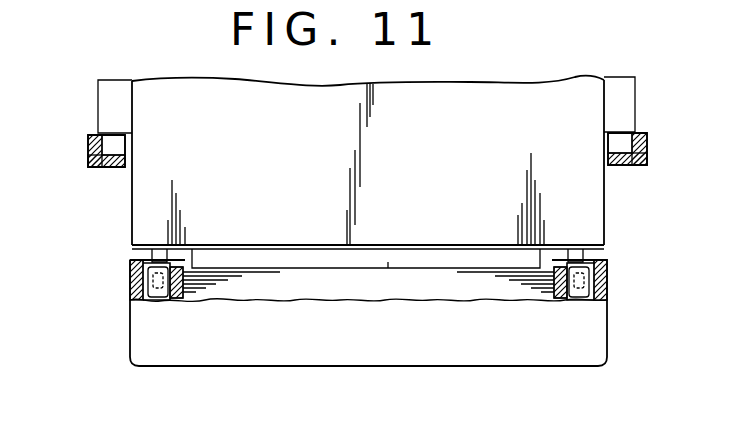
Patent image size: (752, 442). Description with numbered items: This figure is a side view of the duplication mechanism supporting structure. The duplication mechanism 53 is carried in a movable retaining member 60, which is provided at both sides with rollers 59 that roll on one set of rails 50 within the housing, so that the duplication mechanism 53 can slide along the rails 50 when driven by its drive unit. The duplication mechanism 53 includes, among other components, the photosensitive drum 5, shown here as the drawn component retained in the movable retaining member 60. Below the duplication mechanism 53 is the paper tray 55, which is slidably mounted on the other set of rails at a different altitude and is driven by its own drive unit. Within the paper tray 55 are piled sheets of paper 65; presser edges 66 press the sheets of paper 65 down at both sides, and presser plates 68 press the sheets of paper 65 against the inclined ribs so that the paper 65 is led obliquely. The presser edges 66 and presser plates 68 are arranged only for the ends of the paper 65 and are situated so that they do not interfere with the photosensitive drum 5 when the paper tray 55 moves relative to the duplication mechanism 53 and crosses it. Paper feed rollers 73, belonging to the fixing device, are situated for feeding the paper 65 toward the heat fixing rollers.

The photosensitive drum 5 is at (388, 262).
The rails 50 is at (93, 153).
The duplication mechanism 53 is at (518, 76).
The paper tray 55 is at (607, 325).
The rollers 59 is at (112, 141).
The movable retaining member 60 is at (203, 98).
The paper 65 is at (327, 291).
The presser edges 66 is at (182, 298).
The presser plates 68 is at (158, 298).
The paper feed rollers 73 is at (158, 257).